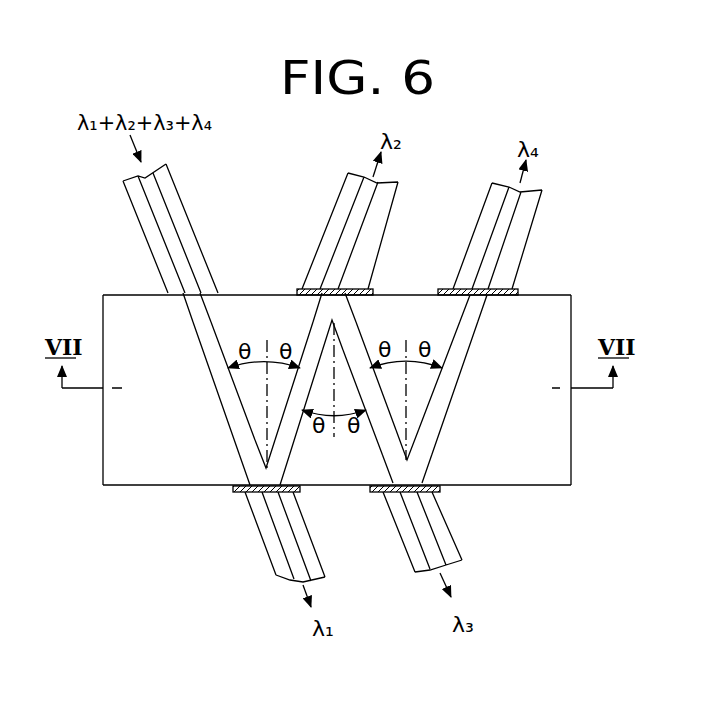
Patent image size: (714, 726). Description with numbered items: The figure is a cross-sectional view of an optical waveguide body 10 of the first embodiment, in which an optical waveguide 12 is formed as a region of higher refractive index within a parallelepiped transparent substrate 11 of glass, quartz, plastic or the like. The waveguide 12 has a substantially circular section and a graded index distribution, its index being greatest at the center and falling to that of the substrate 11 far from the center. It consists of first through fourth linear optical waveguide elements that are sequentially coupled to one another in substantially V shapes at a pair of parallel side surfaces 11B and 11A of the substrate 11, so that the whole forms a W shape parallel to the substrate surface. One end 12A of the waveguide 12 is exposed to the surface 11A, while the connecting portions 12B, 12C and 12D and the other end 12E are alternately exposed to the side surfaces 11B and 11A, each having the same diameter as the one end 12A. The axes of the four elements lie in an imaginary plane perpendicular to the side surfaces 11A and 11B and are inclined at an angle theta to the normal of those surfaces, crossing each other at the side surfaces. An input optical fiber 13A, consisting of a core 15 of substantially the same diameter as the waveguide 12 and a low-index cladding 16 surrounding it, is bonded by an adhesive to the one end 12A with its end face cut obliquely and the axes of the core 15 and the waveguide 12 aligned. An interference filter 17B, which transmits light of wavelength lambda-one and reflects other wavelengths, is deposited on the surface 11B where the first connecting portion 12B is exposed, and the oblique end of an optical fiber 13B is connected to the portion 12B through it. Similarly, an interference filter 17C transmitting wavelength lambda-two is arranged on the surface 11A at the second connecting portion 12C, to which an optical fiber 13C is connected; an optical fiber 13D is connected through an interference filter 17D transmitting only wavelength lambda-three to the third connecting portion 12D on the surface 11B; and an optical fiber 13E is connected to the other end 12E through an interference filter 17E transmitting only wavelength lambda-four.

The optical waveguide body 10 is at (375, 417).
The transparent substrate 11 is at (366, 417).
The side surface 11A is at (562, 295).
The side surface 11B is at (543, 486).
The optical waveguide 12 is at (361, 370).
The one end 12A is at (196, 292).
The first connecting portion 12B is at (262, 478).
The second connecting portion 12C is at (340, 306).
The third connecting portion 12D is at (413, 478).
The other end 12E is at (487, 290).
The input optical fiber 13A is at (167, 228).
The optical fiber 13B is at (257, 548).
The optical fiber 13C is at (404, 192).
The optical fiber 13D is at (397, 548).
The optical fiber 13E is at (549, 193).
The core 15 is at (158, 216).
The cladding 16 is at (158, 256).
The interference filter 17B is at (301, 491).
The interference filter 17C is at (372, 290).
The interference filter 17D is at (441, 491).
The interference filter 17E is at (517, 290).